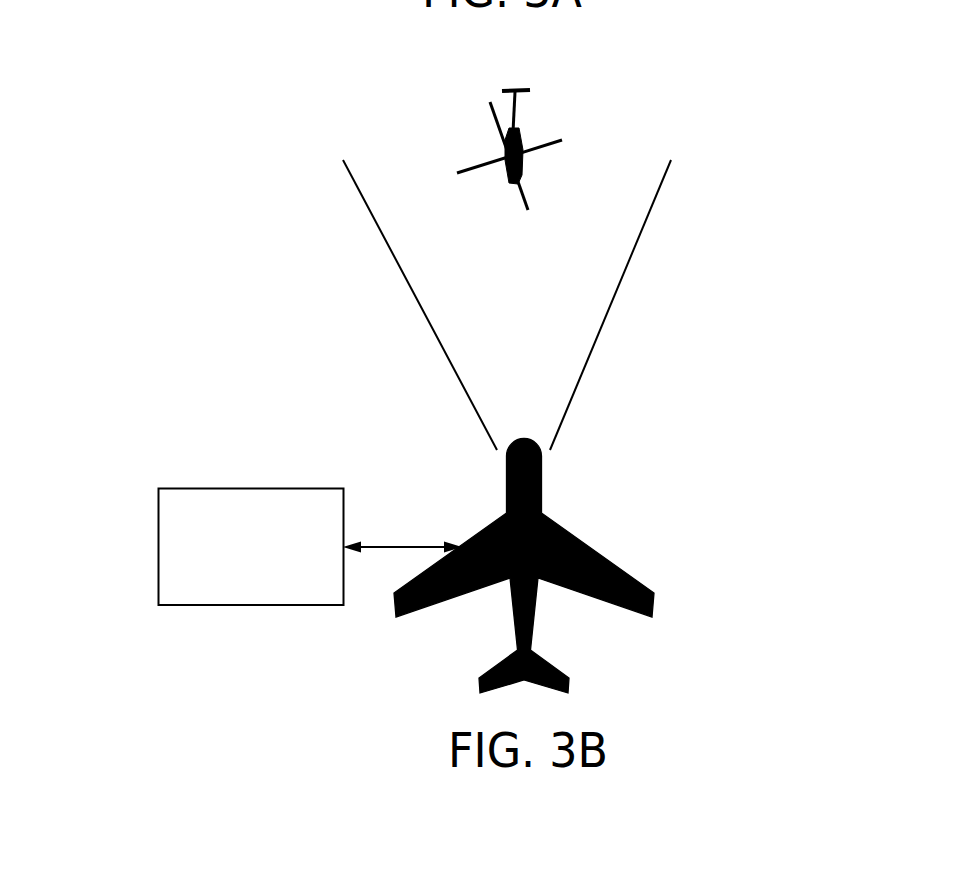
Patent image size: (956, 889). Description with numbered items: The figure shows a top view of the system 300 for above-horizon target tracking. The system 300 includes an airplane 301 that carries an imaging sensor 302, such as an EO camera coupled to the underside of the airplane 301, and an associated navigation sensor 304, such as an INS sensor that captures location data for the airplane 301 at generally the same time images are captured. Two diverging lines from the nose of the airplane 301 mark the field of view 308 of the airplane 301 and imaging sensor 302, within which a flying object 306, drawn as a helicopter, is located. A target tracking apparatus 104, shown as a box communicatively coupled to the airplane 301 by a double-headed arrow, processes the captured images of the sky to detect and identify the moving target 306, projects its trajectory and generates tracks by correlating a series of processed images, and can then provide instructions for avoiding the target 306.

The system for above-horizon target tracking 300 is at (143, 35).
The airplane 301 is at (642, 583).
The imaging sensor 302 is at (480, 494).
The navigation sensor 304 is at (562, 498).
The object 306 is at (512, 88).
The field of view 308 is at (638, 242).
The target tracking apparatus 104 is at (270, 585).